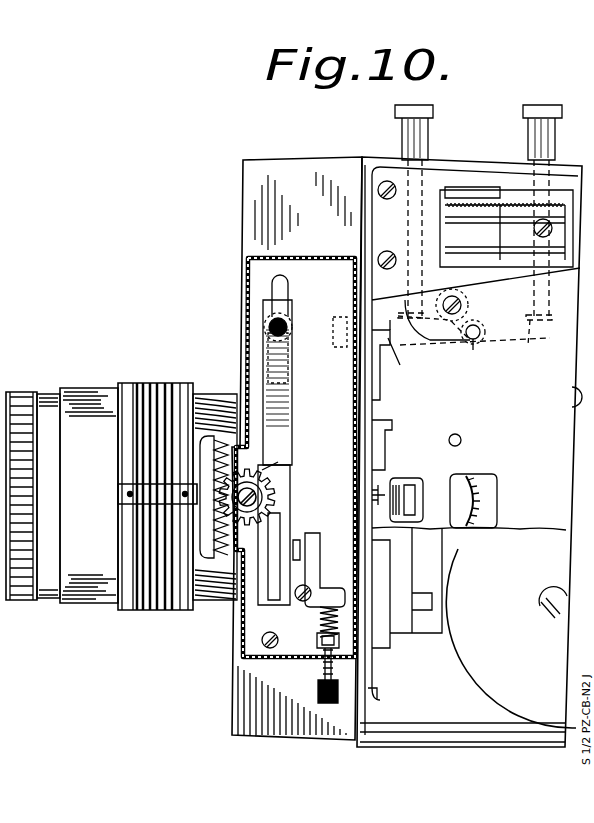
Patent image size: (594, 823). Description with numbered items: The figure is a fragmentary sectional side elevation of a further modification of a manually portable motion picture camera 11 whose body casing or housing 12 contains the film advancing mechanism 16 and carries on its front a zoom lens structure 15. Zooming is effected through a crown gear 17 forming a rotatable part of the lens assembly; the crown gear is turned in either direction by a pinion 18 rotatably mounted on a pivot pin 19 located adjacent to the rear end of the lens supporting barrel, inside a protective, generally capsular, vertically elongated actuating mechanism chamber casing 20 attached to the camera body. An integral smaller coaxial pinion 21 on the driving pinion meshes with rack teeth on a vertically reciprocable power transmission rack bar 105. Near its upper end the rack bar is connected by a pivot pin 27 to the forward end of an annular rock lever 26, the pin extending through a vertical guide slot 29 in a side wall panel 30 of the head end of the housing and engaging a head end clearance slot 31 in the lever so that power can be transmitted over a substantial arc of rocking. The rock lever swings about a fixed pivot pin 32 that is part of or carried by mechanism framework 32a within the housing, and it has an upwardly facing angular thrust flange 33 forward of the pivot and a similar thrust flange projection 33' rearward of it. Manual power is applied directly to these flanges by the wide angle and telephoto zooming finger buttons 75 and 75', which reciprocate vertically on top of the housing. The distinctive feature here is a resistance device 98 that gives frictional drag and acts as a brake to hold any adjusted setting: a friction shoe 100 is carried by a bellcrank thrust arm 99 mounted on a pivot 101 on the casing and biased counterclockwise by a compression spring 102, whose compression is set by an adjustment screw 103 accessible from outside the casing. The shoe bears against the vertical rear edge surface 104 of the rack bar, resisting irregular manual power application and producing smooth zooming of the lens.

The motion picture camera 11 is at (232, 162).
The body casing or housing 12 is at (357, 742).
The zoom lens structure 15 is at (162, 612).
The film advancing mechanism 16 is at (390, 480).
The crown gear 17 is at (218, 437).
The pinion 18 is at (262, 470).
The pivot pin 19 is at (136, 472).
The actuating mechanism chamber casing 20 is at (253, 664).
The coaxial pinion 21 is at (268, 478).
The rock lever 26 is at (400, 365).
The pivot pin 27 is at (289, 329).
The vertical guide slot 29 is at (285, 292).
The side wall panel 30 is at (302, 180).
The head end clearance slot 31 is at (400, 345).
The fixed pivot pin 32 is at (478, 345).
The mechanism framework 32a is at (520, 416).
The angular thrust flange 33 is at (434, 330).
The angular thrust flange projection 33' is at (475, 340).
The wide angle zooming finger button 75 is at (417, 201).
The telephoto zooming finger button 75' is at (522, 204).
The resistance device 98 is at (250, 639).
The thrust arm 99 is at (315, 565).
The friction shoe 100 is at (298, 542).
The pivot 101 is at (302, 603).
The compression spring 102 is at (318, 622).
The adjustment screw 103 is at (320, 675).
The vertical rear edge surface 104 is at (282, 500).
The rack bar 105 is at (282, 415).